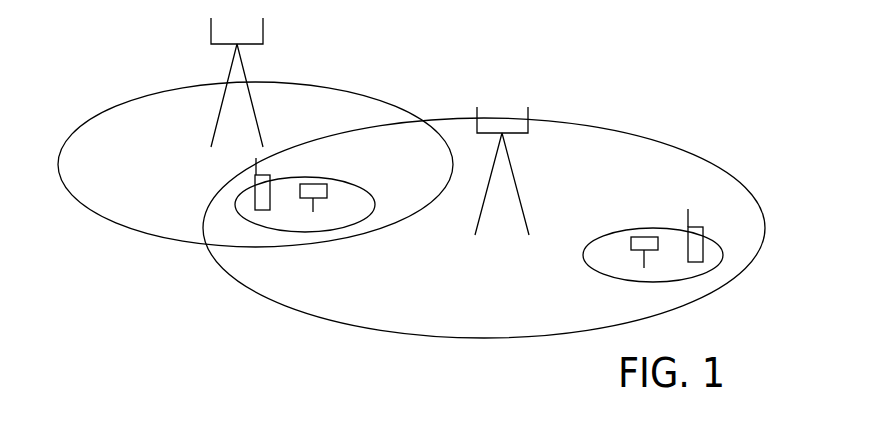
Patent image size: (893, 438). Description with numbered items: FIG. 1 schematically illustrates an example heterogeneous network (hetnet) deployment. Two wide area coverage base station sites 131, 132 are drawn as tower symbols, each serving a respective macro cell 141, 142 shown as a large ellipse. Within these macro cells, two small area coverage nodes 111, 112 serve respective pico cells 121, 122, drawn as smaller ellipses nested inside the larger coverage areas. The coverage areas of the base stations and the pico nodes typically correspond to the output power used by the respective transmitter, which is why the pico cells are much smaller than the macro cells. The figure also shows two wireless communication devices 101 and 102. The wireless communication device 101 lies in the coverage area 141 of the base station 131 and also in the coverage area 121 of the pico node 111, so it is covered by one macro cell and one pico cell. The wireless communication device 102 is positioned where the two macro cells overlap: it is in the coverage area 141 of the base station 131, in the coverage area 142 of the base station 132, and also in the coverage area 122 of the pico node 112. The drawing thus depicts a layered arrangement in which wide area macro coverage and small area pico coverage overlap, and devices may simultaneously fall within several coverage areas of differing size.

The wireless communication device 101 is at (695, 262).
The wireless communication device 102 is at (263, 210).
The small area coverage node 111 is at (645, 237).
The small area coverage node 112 is at (321, 184).
The pico cell 121 is at (715, 238).
The pico cell 122 is at (335, 240).
The wide area coverage base station site 131 is at (518, 185).
The wide area coverage base station site 132 is at (255, 108).
The macro cell 141 is at (633, 132).
The macro cell 142 is at (147, 95).